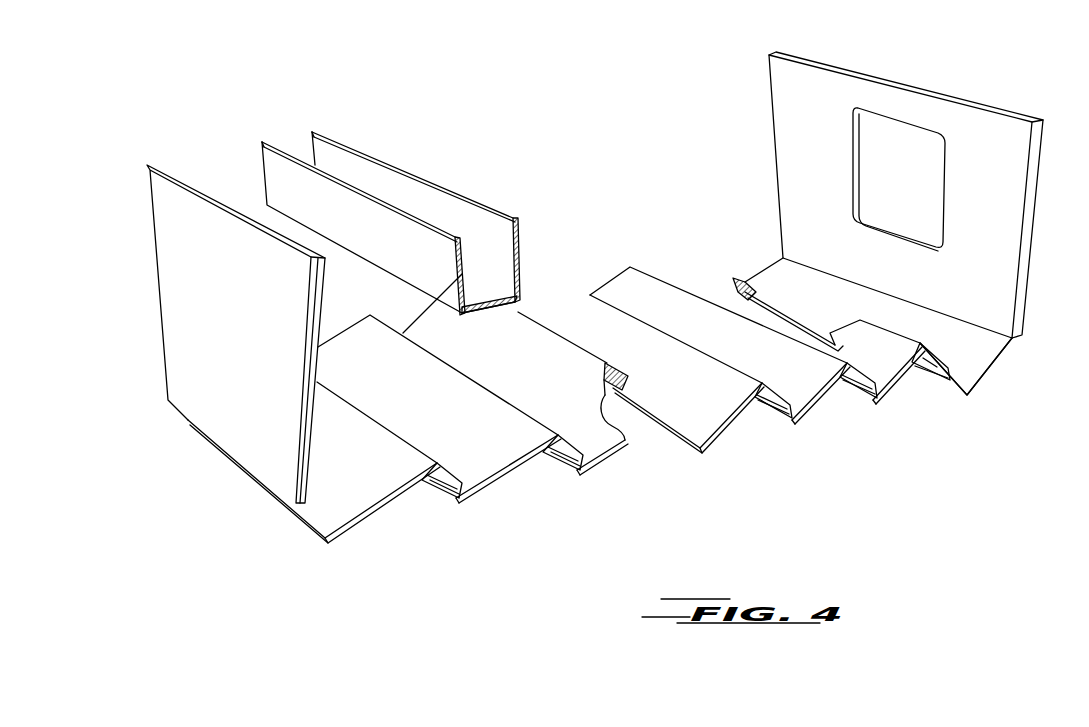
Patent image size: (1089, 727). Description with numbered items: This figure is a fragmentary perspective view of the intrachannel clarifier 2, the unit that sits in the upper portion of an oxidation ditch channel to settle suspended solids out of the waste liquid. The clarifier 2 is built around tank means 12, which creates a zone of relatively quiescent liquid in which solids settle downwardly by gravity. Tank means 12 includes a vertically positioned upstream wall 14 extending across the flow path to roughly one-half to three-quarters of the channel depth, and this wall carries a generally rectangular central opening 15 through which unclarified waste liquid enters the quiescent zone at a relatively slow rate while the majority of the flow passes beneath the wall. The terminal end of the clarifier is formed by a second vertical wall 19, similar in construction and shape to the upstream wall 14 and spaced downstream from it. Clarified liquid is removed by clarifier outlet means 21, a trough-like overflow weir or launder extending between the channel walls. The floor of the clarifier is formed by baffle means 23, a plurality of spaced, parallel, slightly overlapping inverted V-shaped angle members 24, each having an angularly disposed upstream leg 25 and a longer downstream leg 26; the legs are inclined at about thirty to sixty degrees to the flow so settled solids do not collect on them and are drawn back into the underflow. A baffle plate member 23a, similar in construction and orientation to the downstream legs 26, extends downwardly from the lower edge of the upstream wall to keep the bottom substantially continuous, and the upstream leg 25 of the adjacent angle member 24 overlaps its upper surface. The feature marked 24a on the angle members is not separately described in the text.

The intrachannel clarifier 2 is at (518, 100).
The tank means 12 is at (770, 140).
The upstream wall 14 is at (915, 283).
The central opening 15 is at (904, 191).
The wall 19 is at (180, 276).
The clarifier outlet means 21 is at (378, 153).
The baffle means 23 is at (657, 235).
The baffle plate member 23a is at (978, 358).
The angle member 24 is at (435, 461).
The tab hook portion 24a is at (452, 494).
The upstream leg 25 is at (548, 493).
The downstream leg 26 is at (346, 451).